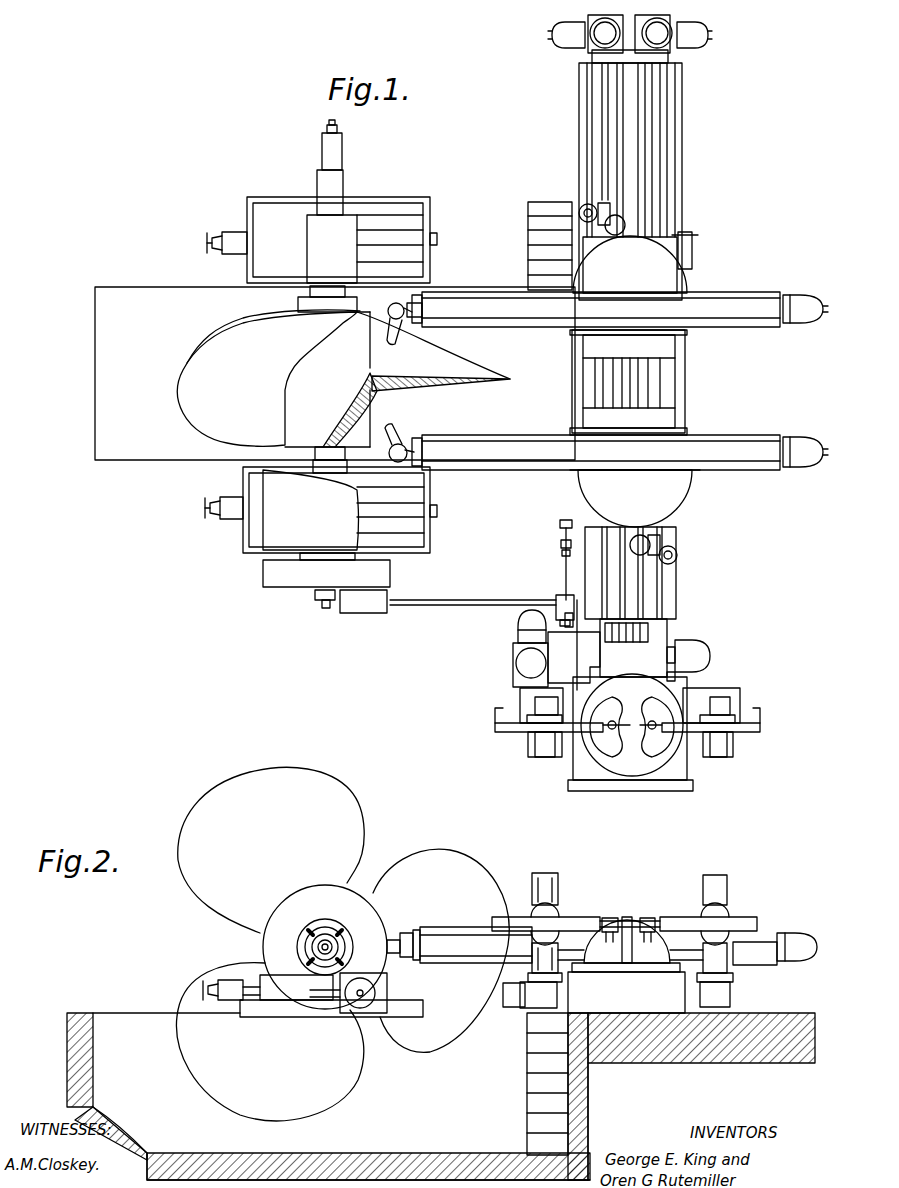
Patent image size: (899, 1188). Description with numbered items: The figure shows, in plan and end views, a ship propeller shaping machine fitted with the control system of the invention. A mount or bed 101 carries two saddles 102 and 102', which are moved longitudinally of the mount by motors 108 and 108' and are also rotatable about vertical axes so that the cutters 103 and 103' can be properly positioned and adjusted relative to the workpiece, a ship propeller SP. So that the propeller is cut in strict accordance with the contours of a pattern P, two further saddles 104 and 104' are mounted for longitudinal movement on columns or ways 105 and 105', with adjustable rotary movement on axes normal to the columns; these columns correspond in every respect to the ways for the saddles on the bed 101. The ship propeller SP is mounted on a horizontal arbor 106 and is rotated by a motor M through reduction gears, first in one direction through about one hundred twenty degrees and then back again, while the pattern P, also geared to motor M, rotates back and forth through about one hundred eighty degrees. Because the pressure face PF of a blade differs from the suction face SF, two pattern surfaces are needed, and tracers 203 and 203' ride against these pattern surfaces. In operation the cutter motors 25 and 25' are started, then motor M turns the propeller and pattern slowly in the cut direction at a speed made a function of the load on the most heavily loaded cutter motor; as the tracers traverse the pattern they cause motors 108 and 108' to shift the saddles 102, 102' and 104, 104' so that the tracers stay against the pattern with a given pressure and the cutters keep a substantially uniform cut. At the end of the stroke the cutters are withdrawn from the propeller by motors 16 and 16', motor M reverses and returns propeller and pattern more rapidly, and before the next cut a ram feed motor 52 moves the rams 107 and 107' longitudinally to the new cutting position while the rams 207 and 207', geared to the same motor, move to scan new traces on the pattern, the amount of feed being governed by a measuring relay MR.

In FIG. 1, the mount 101 is at (683, 173).
In FIG. 2, the mount 101 is at (625, 1009).
In FIG. 1, the saddle 102 is at (635, 498).
In FIG. 2, the saddle 102 is at (621, 930).
In FIG. 1, the saddle 102' is at (635, 262).
In FIG. 1, the cutter 103 is at (416, 436).
In FIG. 2, the cutter 103 is at (421, 917).
In FIG. 1, the cutter 103' is at (416, 336).
In FIG. 1, the saddle 104 is at (745, 703).
In FIG. 2, the saddle 104 is at (740, 969).
In FIG. 1, the saddle 104' is at (505, 703).
In FIG. 2, the saddle 104' is at (510, 969).
In FIG. 1, the column 105 is at (733, 763).
In FIG. 2, the column 105 is at (745, 895).
In FIG. 1, the column 105' is at (507, 750).
In FIG. 2, the column 105' is at (564, 877).
In FIG. 1, the horizontal arbor 106 is at (342, 158).
In FIG. 1, the ram 107 is at (596, 468).
In FIG. 2, the ram 107 is at (476, 967).
In FIG. 1, the ram 107' is at (596, 324).
In FIG. 1, the motor 108 is at (671, 31).
In FIG. 1, the motor 108' is at (555, 54).
In FIG. 1, the motor 16 is at (677, 568).
In FIG. 1, the motor 16' is at (576, 231).
In FIG. 2, the tracer 203 is at (655, 913).
In FIG. 2, the tracer 203' is at (599, 905).
In FIG. 1, the ram 207 is at (729, 737).
In FIG. 2, the ram 207 is at (731, 915).
In FIG. 1, the ram 207' is at (517, 728).
In FIG. 2, the ram 207' is at (545, 894).
In FIG. 1, the cutter motor 25 is at (805, 471).
In FIG. 2, the cutter motor 25 is at (775, 962).
In FIG. 1, the cutter motor 25' is at (805, 328).
In FIG. 1, the ram feed motor 52 is at (712, 652).
In FIG. 1, the motor M is at (518, 638).
In FIG. 1, the measuring relay MR is at (678, 678).
In FIG. 1, the pattern P is at (597, 745).
In FIG. 2, the pattern P is at (647, 968).
In FIG. 1, the pressure face PF is at (505, 363).
In FIG. 1, the suction face SF is at (655, 748).
In FIG. 1, the ship propeller SP is at (200, 351).
In FIG. 2, the ship propeller SP is at (345, 1100).